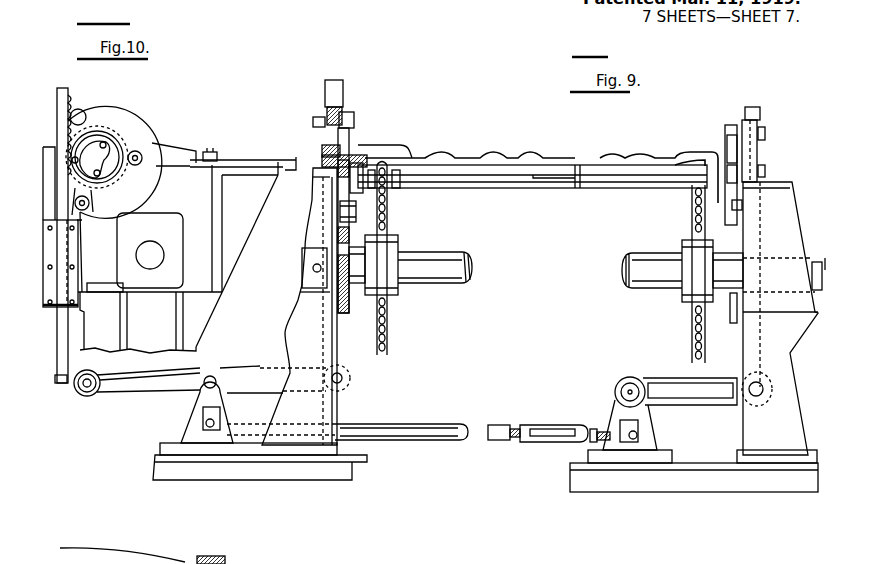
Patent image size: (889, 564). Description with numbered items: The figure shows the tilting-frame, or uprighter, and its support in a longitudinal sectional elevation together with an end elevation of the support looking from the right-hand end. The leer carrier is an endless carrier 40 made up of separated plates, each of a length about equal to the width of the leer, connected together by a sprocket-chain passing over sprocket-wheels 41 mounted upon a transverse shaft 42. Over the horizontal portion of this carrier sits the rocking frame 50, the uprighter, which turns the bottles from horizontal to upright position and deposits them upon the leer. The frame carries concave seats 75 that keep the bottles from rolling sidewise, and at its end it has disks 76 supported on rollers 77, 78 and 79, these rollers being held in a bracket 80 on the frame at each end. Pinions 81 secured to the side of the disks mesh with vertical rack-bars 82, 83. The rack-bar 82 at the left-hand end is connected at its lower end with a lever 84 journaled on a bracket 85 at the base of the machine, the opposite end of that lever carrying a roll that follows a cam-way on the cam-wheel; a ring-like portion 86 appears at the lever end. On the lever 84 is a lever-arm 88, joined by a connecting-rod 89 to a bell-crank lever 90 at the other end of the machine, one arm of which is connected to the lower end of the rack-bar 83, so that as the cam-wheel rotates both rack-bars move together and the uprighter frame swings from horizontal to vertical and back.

In FIG. 9, the endless carrier 40 is at (569, 192).
In FIG. 9, the sprocket-wheels 41 is at (388, 330).
In FIG. 9, the transverse shaft 42 is at (474, 252).
In FIG. 9, the rocking frame 50 is at (572, 164).
In FIG. 9, the concave seats 75 is at (506, 157).
In FIG. 9, the disks 76 is at (360, 139).
In FIG. 10, the roller 77 is at (75, 203).
In FIG. 9, the roller 77 is at (356, 213).
In FIG. 10, the roller 78 is at (85, 112).
In FIG. 9, the roller 78 is at (351, 113).
In FIG. 10, the roller 79 is at (142, 156).
In FIG. 10, the bracket 80 is at (158, 188).
In FIG. 10, the pinions 81 is at (103, 130).
In FIG. 9, the pinions 81 is at (338, 140).
In FIG. 9, the rack-bar 82 is at (325, 95).
In FIG. 10, the rack-bar 83 is at (62, 88).
In FIG. 9, the rack-bar 83 is at (760, 115).
In FIG. 9, the lever 84 is at (258, 370).
In FIG. 9, the bracket 85 is at (214, 378).
In FIG. 9, the ring 86 is at (79, 392).
In FIG. 9, the lever-arm 88 is at (203, 418).
In FIG. 9, the connecting-rod 89 is at (402, 424).
In FIG. 9, the bell-crank lever 90 is at (697, 405).